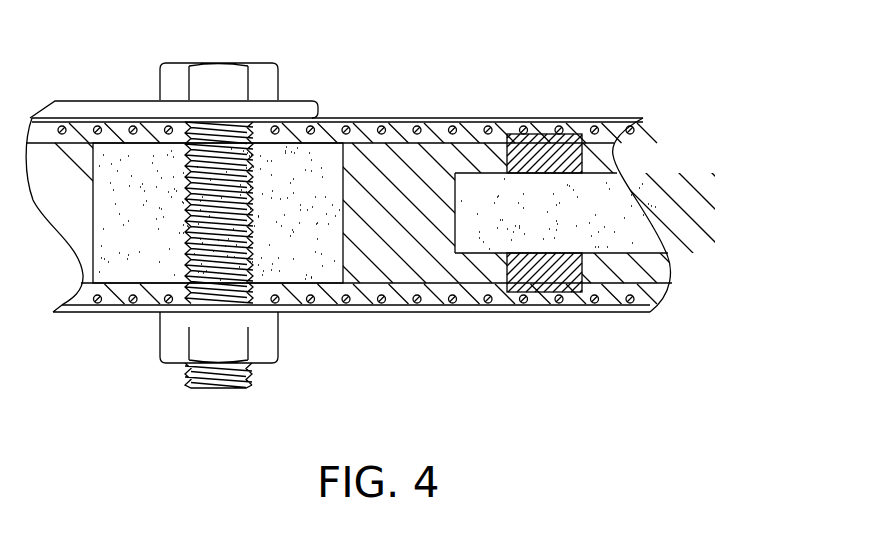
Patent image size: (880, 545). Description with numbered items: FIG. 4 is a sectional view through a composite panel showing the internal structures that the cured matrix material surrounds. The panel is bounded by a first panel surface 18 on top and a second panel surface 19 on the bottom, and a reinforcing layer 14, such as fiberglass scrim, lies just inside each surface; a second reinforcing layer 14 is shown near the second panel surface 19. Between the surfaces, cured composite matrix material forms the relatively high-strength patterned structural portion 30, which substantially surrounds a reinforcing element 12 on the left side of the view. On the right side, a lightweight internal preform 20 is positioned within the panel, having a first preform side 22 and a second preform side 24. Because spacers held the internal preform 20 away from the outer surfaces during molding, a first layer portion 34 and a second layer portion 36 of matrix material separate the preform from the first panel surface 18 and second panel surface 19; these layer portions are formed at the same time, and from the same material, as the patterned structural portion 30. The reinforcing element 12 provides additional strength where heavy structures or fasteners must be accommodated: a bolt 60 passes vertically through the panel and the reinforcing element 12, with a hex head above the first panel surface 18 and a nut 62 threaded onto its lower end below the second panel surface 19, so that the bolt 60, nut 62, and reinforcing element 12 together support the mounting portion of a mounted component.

The reinforcing element 12 is at (335, 137).
The reinforcing layer 14 is at (632, 127).
The first panel surface 18 is at (618, 113).
The second panel surface 19 is at (630, 317).
The internal preform 20 is at (638, 233).
The first preform side 22 is at (618, 177).
The second preform side 24 is at (667, 246).
The patterned structural portion 30 is at (412, 178).
The first layer portion 34 is at (597, 148).
The second layer portion 36 is at (595, 282).
The bolt 60 is at (165, 73).
The nut 62 is at (170, 352).